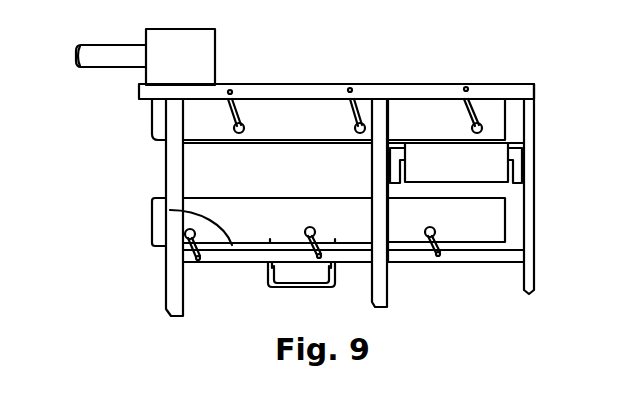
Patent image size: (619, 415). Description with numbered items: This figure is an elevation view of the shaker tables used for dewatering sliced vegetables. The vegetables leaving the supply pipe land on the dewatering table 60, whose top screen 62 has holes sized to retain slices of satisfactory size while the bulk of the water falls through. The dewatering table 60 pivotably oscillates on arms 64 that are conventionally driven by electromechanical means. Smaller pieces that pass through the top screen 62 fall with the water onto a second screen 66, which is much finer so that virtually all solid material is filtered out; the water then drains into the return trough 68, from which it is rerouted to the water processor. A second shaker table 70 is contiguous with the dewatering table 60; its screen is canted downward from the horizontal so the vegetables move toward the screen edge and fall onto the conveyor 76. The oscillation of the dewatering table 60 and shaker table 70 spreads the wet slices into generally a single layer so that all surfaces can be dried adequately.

The dewatering table 60 is at (148, 118).
The top screen 62 is at (158, 145).
The arms 64 is at (243, 107).
The second screen 66 is at (170, 210).
The return trough 68 is at (268, 280).
The shaker table 70 is at (515, 119).
The conveyor 76 is at (492, 157).